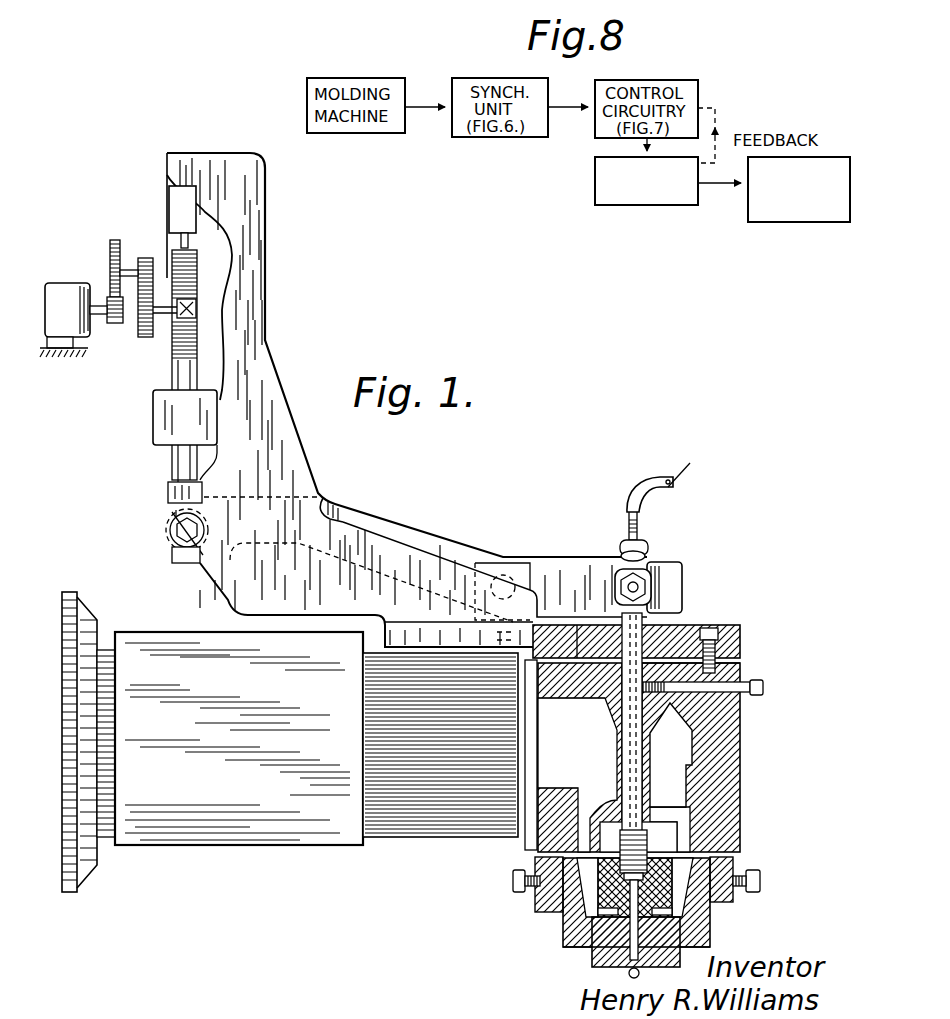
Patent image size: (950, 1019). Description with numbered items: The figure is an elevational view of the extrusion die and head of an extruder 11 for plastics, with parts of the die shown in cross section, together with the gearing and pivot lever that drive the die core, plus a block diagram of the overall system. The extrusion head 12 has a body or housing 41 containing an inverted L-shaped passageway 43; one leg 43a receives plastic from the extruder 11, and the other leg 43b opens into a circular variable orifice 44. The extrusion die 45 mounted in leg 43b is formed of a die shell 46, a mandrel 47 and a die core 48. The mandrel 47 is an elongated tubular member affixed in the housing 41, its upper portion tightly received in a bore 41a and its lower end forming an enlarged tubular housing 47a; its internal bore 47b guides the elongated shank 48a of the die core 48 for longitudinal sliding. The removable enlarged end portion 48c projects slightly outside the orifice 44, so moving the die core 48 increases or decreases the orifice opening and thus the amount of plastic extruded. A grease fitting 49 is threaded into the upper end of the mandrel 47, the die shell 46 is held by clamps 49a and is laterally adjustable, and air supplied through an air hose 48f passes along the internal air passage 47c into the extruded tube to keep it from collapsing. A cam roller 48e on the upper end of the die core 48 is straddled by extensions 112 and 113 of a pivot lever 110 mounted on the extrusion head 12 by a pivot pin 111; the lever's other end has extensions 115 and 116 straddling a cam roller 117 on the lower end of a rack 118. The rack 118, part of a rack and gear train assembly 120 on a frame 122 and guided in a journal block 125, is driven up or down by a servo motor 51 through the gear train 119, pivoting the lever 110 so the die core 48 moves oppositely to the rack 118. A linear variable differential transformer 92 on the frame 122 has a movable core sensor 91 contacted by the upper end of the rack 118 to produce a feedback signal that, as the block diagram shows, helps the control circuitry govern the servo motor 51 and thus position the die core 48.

In FIG. 1, the extruder 11 is at (192, 850).
In FIG. 1, the extrusion head 12 is at (383, 848).
In FIG. 1, the body or housing 41 is at (743, 640).
In FIG. 1, the bore 41a is at (655, 626).
In FIG. 1, the passageway 43 is at (592, 760).
In FIG. 1, the leg of passageway 43a is at (571, 713).
In FIG. 1, the leg of passageway 43b is at (576, 785).
In FIG. 1, the variable orifice 44 is at (592, 956).
In FIG. 1, the extrusion die 45 is at (686, 821).
In FIG. 1, the die shell 46 is at (563, 927).
In FIG. 1, the mandrel 47 is at (653, 731).
In FIG. 1, the tubular housing 47a is at (558, 860).
In FIG. 1, the internal bore 47b is at (651, 765).
In FIG. 1, the internal air passage 47c is at (660, 703).
In FIG. 8, the die core 48 is at (785, 222).
In FIG. 1, the die core 48 is at (642, 753).
In FIG. 1, the elongated shank 48a is at (642, 796).
In FIG. 1, the enlarged end portion 48c is at (592, 965).
In FIG. 1, the cam roller 48e is at (652, 580).
In FIG. 1, the air hose 48f is at (640, 480).
In FIG. 1, the grease fitting 49 is at (740, 672).
In FIG. 1, the clamps 49a is at (538, 895).
In FIG. 8, the servo motor 51 is at (647, 206).
In FIG. 1, the servo motor 51 is at (72, 268).
In FIG. 1, the movable core sensor 91 is at (190, 247).
In FIG. 1, the linear variable differential transformer 92 is at (175, 203).
In FIG. 1, the pivot lever 110 is at (390, 518).
In FIG. 1, the pivot pin 111 is at (513, 573).
In FIG. 1, the extension 112 is at (650, 561).
In FIG. 1, the extension 113 is at (648, 610).
In FIG. 1, the extension 115 is at (170, 506).
In FIG. 1, the extension 116 is at (172, 557).
In FIG. 1, the cam roller 117 is at (168, 533).
In FIG. 1, the rack 118 is at (175, 368).
In FIG. 1, the gear train 119 is at (192, 305).
In FIG. 1, the rack and gear train assembly 120 is at (114, 236).
In FIG. 1, the frame 122 is at (247, 325).
In FIG. 1, the journal block 125 is at (165, 413).